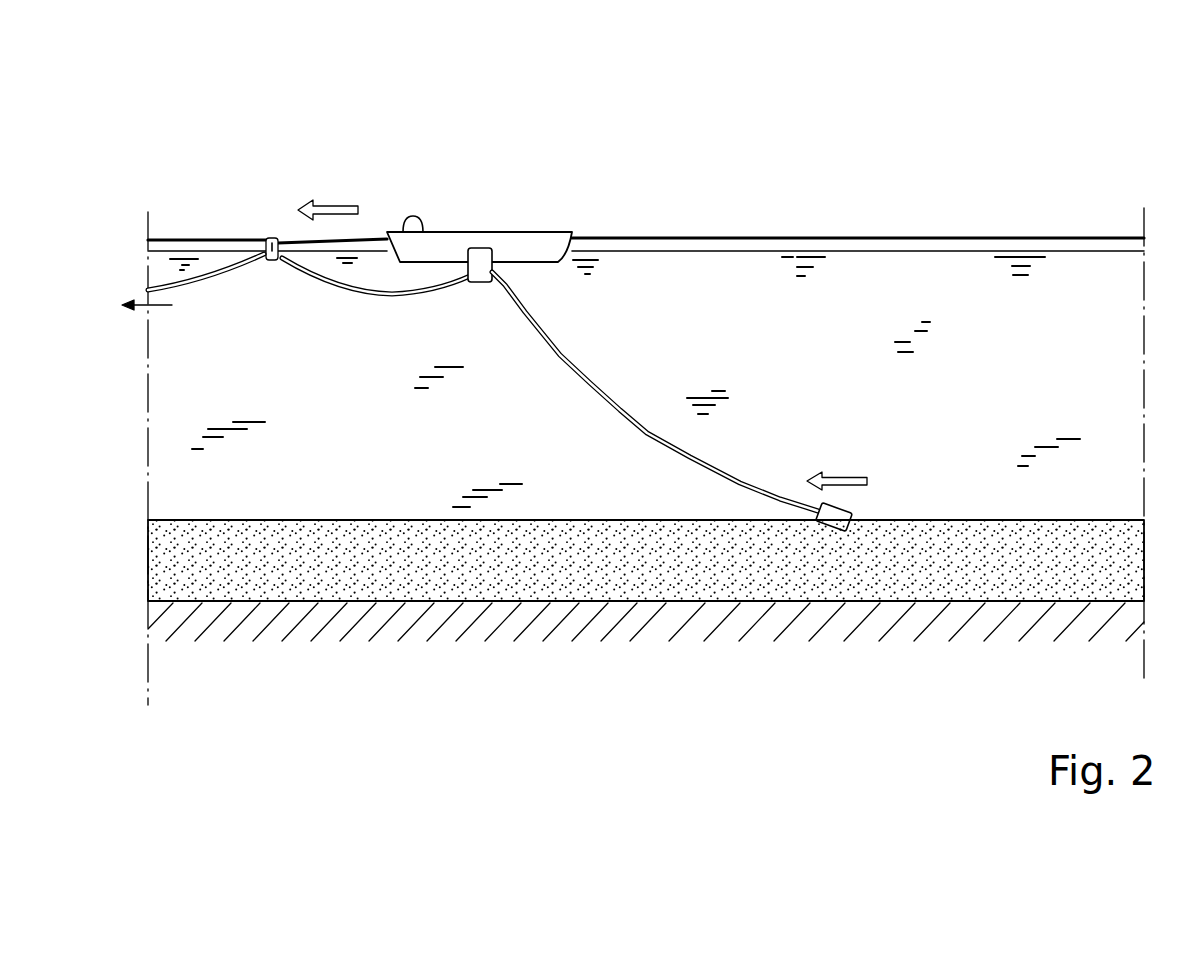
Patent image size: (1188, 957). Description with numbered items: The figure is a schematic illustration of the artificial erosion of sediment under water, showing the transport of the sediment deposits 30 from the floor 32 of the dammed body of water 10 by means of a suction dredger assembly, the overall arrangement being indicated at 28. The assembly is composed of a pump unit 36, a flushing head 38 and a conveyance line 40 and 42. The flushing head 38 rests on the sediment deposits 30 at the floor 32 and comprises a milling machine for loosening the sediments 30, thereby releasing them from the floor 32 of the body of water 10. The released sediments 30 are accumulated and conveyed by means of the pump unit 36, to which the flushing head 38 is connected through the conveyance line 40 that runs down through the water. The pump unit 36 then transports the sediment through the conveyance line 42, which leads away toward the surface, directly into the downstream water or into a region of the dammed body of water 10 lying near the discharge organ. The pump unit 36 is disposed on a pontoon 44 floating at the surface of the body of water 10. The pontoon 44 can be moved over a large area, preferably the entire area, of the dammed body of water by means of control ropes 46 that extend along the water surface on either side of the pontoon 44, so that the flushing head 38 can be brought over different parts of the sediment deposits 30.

The body of water 10 is at (853, 283).
The marine seismic survey system 28 is at (467, 163).
The sediment deposits 30 is at (581, 542).
The floor 32 is at (622, 614).
The pump unit 36 is at (481, 274).
The flushing head 38 is at (850, 512).
The conveyance line 40 is at (592, 382).
The conveyance line 42 is at (334, 284).
The pontoon 44 is at (537, 237).
The control ropes 46 is at (222, 238).